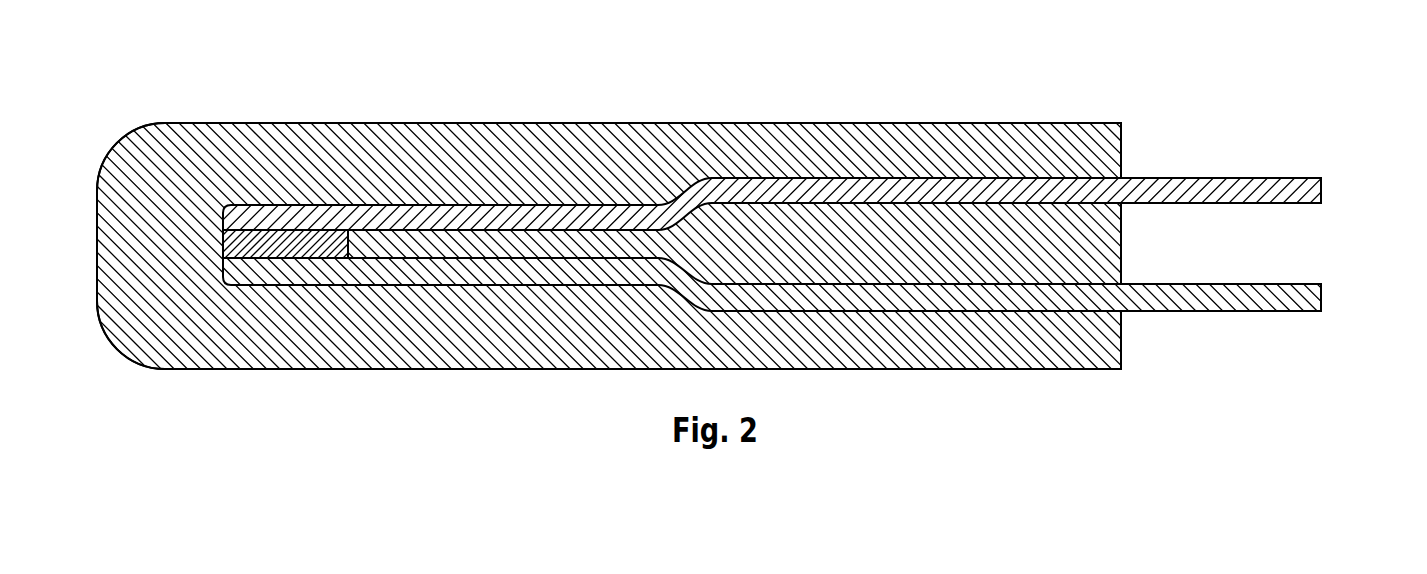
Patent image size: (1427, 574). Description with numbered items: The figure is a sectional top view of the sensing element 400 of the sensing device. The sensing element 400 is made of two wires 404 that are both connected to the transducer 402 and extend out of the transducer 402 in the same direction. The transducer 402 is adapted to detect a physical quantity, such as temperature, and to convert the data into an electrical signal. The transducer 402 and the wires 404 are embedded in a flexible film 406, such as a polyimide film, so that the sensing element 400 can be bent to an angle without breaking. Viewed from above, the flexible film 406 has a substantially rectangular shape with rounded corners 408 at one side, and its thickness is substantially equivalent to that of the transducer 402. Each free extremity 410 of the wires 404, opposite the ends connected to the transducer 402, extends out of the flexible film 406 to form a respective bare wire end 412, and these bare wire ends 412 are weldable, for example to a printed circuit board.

The sensing element 400 is at (706, 262).
The transducer 402 is at (268, 245).
The wires 404 is at (897, 407).
The flexible film 406 is at (372, 332).
The rounded corners 408 is at (125, 357).
The free extremity 410 is at (1205, 340).
The bare wire end 412 is at (1367, 235).